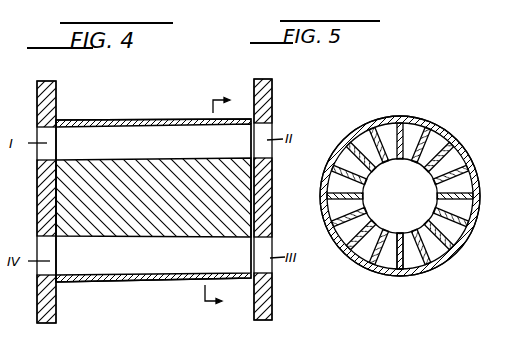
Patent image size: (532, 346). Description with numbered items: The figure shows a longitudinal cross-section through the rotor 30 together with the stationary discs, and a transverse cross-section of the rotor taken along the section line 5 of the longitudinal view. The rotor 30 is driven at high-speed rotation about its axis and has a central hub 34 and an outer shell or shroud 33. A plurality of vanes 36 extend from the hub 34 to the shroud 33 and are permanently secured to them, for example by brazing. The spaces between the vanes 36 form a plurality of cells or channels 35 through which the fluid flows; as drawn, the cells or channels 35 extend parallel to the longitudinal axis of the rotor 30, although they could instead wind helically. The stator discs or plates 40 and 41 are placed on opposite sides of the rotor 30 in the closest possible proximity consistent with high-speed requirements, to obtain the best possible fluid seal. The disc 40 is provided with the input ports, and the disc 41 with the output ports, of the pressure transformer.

In FIG. 4, the rotor 30 is at (173, 113).
In FIG. 5, the rotor 30 is at (452, 259).
In FIG. 4, the outer shell or shroud 33 is at (113, 109).
In FIG. 5, the outer shell or shroud 33 is at (470, 153).
In FIG. 5, the hub 34 is at (409, 233).
In FIG. 4, the cells or channels 35 is at (182, 150).
In FIG. 5, the cells or channels 35 is at (410, 133).
In FIG. 5, the vanes 36 is at (382, 257).
In FIG. 4, the stator disc or plate 40 is at (57, 94).
In FIG. 4, the stator disc or plate 41 is at (273, 89).
In FIG. 4, the section line 5- 5 is at (223, 200).